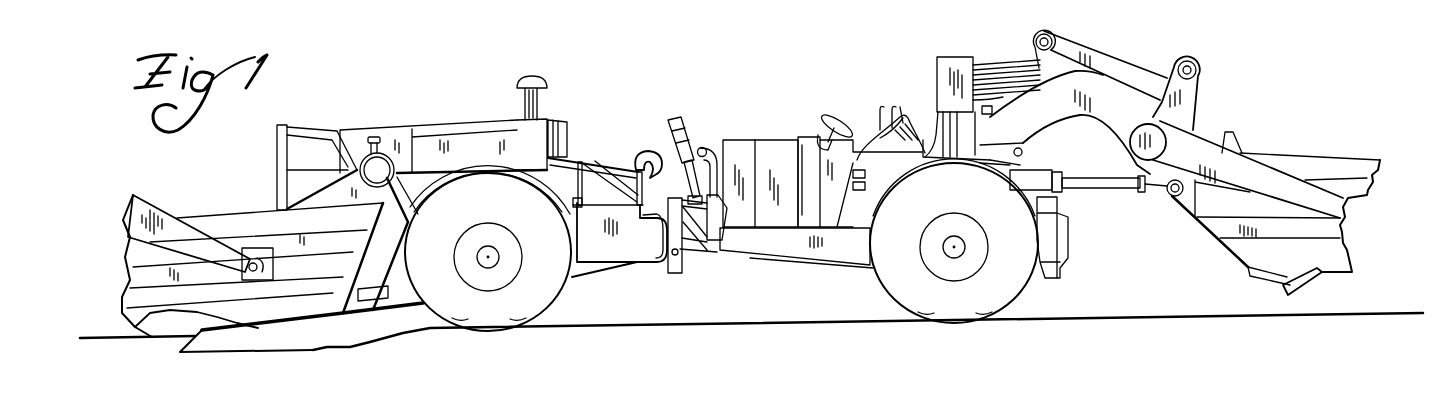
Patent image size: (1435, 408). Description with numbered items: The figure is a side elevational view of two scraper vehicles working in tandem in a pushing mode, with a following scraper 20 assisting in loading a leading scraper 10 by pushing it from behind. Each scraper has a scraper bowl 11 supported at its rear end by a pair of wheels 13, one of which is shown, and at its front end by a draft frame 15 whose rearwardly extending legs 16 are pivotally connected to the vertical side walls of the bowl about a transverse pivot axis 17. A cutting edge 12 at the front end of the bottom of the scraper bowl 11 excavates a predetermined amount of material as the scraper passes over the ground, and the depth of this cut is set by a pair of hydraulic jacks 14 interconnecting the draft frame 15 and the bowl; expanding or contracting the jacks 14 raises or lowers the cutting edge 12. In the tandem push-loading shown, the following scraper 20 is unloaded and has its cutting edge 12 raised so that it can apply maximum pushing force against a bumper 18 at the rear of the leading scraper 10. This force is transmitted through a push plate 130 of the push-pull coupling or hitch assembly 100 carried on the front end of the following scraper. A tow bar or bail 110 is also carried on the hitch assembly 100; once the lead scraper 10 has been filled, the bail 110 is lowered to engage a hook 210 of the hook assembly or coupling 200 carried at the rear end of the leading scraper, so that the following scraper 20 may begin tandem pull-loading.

The leading scraper 10 is at (352, 111).
The scraper bowl 11 is at (210, 217).
The cutting edge 12 is at (182, 350).
The wheels 13 is at (562, 293).
The hydraulic jacks 14 is at (1196, 112).
The draft frame 15 is at (1162, 67).
The rearwardly extending legs 16 is at (149, 207).
The transverse pivot axis 17 is at (272, 263).
The bumper 18 is at (660, 267).
The following scraper 20 is at (843, 112).
The push-pull coupling or hitch assembly 100 is at (702, 142).
The tow bar or bail 110 is at (672, 117).
The push plate 130 is at (668, 272).
The hook assembly or coupling 200 is at (613, 157).
The hook 210 is at (657, 173).